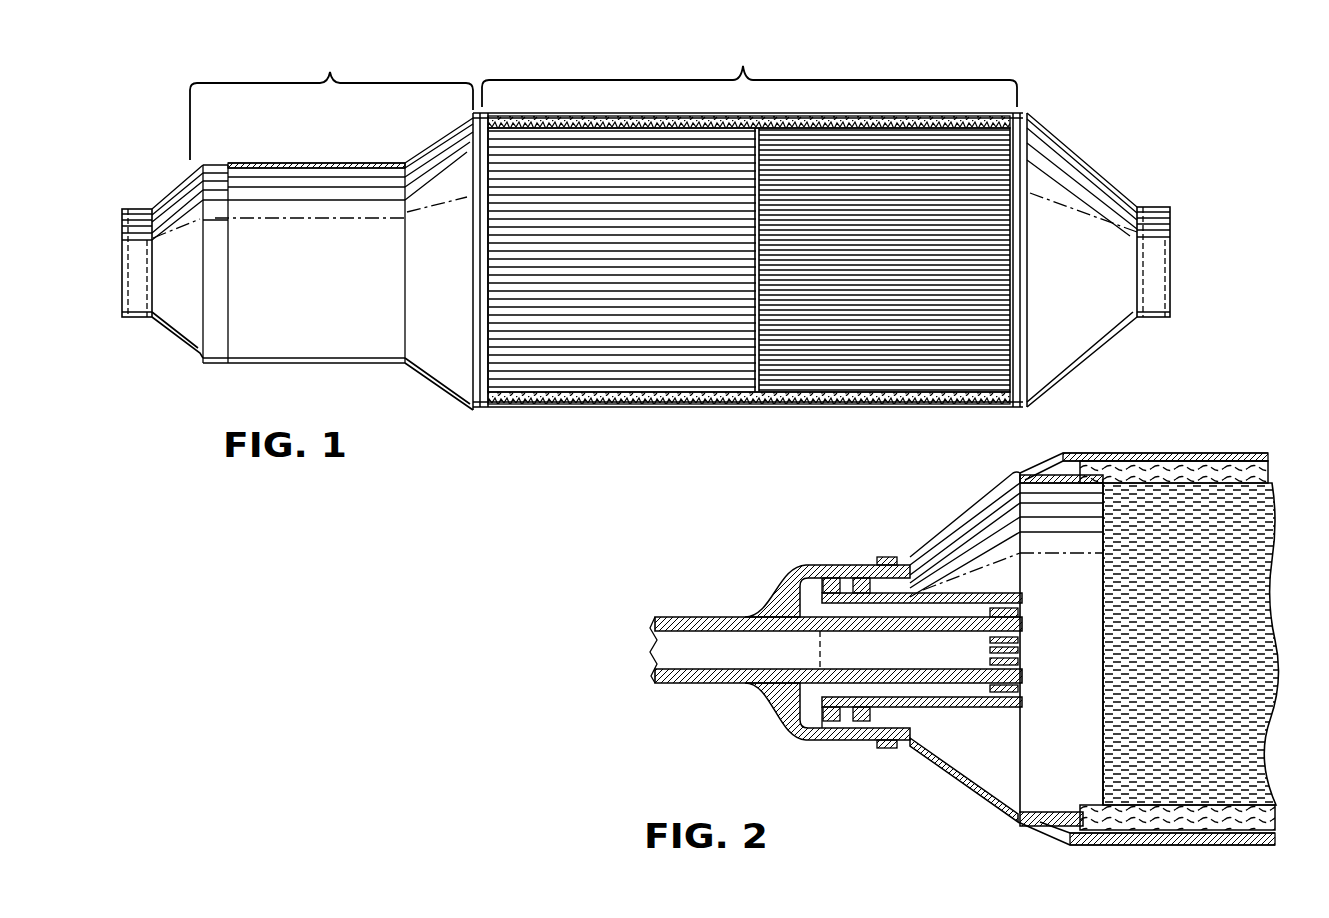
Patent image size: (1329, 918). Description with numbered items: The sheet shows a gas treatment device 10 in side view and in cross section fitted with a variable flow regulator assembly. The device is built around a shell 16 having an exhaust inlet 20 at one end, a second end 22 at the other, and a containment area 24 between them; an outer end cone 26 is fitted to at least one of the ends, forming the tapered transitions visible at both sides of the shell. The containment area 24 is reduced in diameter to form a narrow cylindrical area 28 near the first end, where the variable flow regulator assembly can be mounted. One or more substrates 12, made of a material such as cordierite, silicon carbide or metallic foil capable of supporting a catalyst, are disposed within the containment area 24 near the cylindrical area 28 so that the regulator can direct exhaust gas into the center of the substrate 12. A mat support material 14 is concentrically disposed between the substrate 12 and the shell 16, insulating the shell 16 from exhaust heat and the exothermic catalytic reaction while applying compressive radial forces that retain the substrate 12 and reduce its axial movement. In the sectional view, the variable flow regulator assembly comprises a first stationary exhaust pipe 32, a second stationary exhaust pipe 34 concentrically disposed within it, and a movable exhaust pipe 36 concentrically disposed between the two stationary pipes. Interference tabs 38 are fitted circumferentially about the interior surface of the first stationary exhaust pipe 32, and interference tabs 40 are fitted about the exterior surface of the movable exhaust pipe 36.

In FIG. 1, the gas treatment device 10 is at (146, 135).
In FIG. 2, the gas treatment device 10 is at (899, 795).
In FIG. 2, the substrate 12 is at (1186, 643).
In FIG. 2, the mat support material 14 is at (1268, 474).
In FIG. 2, the shell 16 is at (1198, 452).
In FIG. 1, the exhaust inlet 20 is at (121, 322).
In FIG. 1, the second end 22 is at (1160, 198).
In FIG. 1, the containment area 24 is at (750, 223).
In FIG. 1, the outer end cone 26 is at (182, 342).
In FIG. 2, the outer end cone 26 is at (947, 525).
In FIG. 1, the narrow cylindrical area 28 is at (331, 202).
In FIG. 2, the first stationary exhaust pipe 32 is at (793, 573).
In FIG. 2, the second stationary exhaust pipe 34 is at (758, 688).
In FIG. 2, the movable exhaust pipe 36 is at (1018, 593).
In FIG. 2, the interference tabs 38 is at (857, 578).
In FIG. 2, the interference tabs 40 is at (803, 576).